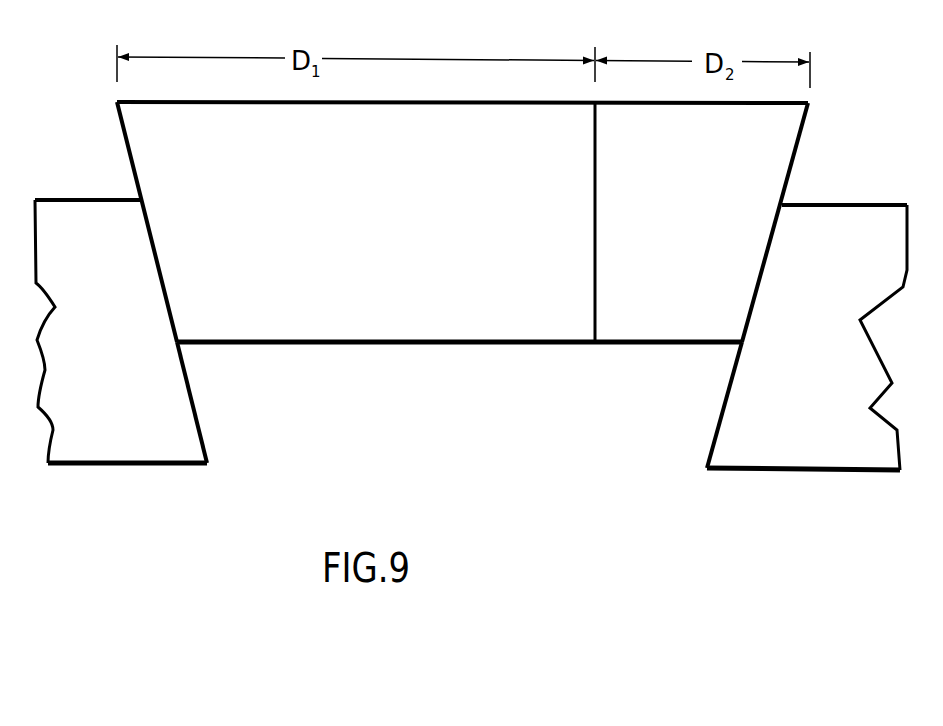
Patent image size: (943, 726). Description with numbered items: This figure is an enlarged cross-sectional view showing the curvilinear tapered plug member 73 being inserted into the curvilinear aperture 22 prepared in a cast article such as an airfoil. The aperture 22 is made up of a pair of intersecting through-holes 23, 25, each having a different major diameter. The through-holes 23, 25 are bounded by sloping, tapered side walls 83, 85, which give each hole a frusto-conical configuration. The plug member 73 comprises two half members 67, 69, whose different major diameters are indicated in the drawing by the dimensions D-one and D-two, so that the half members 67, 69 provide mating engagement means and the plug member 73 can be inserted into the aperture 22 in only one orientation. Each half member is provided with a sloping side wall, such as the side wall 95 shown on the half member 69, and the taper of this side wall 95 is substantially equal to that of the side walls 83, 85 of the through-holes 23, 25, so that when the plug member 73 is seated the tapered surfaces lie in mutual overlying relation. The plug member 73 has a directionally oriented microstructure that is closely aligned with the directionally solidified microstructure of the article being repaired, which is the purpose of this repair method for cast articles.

The curvilinear aperture 22 is at (556, 430).
The through-hole 23 is at (415, 380).
The through-hole 25 is at (634, 375).
The half member 67 is at (393, 255).
The half member 69 is at (690, 255).
The plug member 73 is at (372, 130).
The side wall 83 is at (197, 418).
The side wall 85 is at (713, 433).
The side wall 95 is at (793, 160).